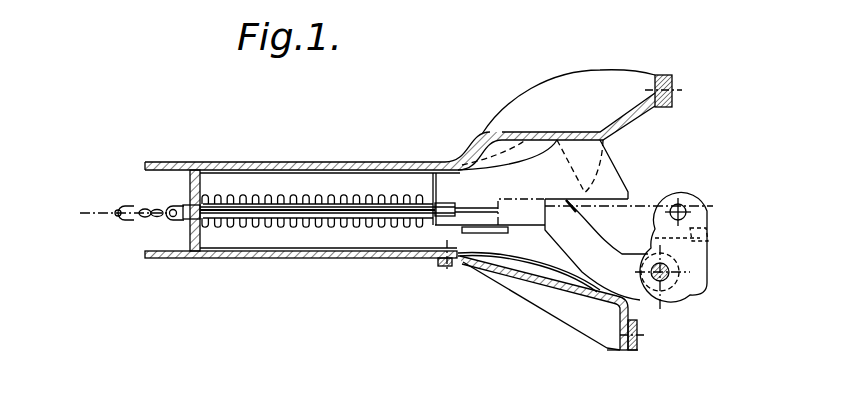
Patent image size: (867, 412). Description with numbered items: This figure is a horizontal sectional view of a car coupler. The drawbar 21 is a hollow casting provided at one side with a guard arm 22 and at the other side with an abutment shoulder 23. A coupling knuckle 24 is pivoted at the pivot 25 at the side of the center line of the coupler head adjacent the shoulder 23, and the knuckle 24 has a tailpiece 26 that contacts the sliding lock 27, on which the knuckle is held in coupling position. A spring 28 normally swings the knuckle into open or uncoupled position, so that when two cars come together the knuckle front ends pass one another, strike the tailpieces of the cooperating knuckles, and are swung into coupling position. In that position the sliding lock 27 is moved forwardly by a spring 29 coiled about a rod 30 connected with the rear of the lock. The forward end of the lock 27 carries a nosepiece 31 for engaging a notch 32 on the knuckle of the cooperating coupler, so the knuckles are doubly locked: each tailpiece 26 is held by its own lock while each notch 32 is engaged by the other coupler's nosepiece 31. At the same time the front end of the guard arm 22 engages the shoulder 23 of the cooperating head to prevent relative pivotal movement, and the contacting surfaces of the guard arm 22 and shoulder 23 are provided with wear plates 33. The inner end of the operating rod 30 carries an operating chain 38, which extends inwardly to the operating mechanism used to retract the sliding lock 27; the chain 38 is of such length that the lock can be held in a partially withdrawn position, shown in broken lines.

The drawbar 21 is at (353, 164).
The guard arm 22 is at (651, 116).
The abutment shoulder 23 is at (606, 335).
The coupling knuckle 24 is at (703, 269).
The pivot 25 is at (668, 280).
The tailpiece 26 is at (567, 233).
The sliding lock 27 is at (474, 180).
The spring 28 is at (528, 255).
The spring 29 is at (267, 204).
The rod 30 is at (278, 218).
The nosepiece 31 is at (607, 170).
The notch 32 is at (708, 233).
The wear plates 33 is at (672, 78).
The operating chain 38 is at (137, 218).